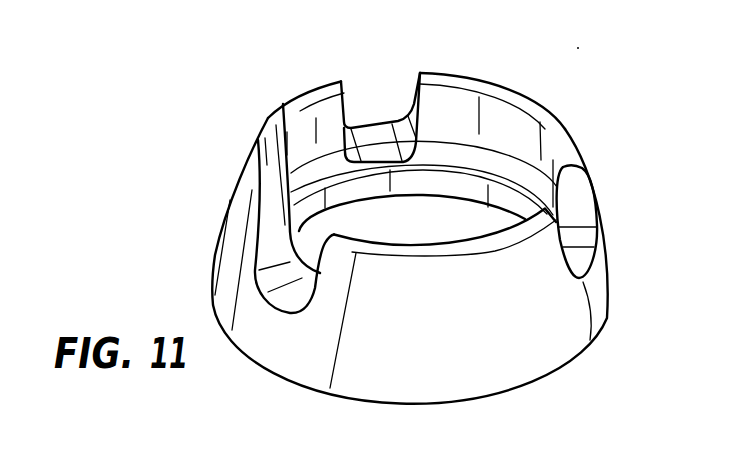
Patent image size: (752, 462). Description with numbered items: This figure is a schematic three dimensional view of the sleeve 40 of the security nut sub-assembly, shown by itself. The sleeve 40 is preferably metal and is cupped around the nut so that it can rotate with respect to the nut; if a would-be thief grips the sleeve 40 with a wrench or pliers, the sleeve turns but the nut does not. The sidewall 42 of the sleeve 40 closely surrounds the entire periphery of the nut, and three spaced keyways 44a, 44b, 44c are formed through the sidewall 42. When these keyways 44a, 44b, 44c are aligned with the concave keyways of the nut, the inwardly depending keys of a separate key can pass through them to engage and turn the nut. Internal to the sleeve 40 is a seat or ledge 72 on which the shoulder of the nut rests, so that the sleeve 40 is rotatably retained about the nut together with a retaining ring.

The sleeve 40 is at (256, 109).
The sidewall 42 is at (545, 343).
The seat or ledge 72 is at (490, 165).
The keyway 44a is at (372, 110).
The keyway 44b is at (278, 243).
The keyway 44c is at (573, 213).